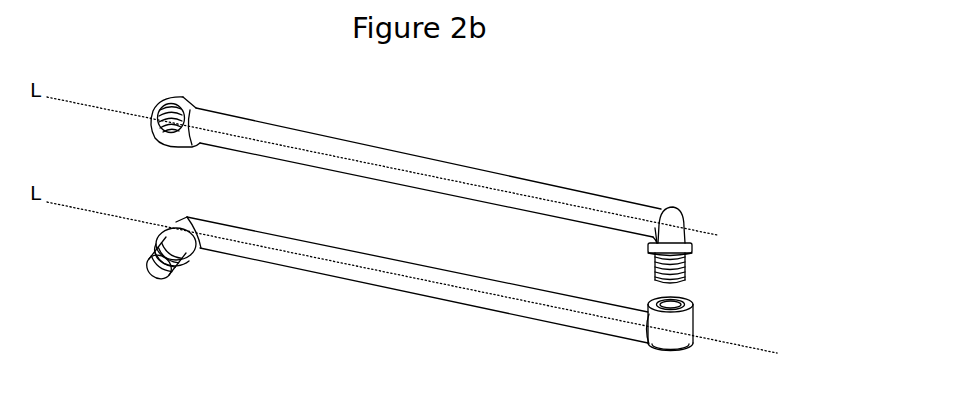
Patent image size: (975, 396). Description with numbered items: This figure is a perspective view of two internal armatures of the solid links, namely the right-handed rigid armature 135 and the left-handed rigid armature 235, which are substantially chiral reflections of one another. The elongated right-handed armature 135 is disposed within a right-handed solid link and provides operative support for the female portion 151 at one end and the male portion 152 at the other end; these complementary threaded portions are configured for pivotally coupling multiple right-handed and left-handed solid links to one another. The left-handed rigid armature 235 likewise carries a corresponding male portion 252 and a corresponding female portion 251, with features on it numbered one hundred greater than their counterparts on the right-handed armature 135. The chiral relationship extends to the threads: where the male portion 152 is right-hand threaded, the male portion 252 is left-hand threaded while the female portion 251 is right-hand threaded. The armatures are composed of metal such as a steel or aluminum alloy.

The right-handed rigid armature 135 is at (353, 157).
The female portion 151 is at (167, 100).
The male portion 152 is at (655, 268).
The left-handed rigid armature 235 is at (448, 295).
The female portion 251 is at (675, 298).
The male portion 252 is at (147, 263).